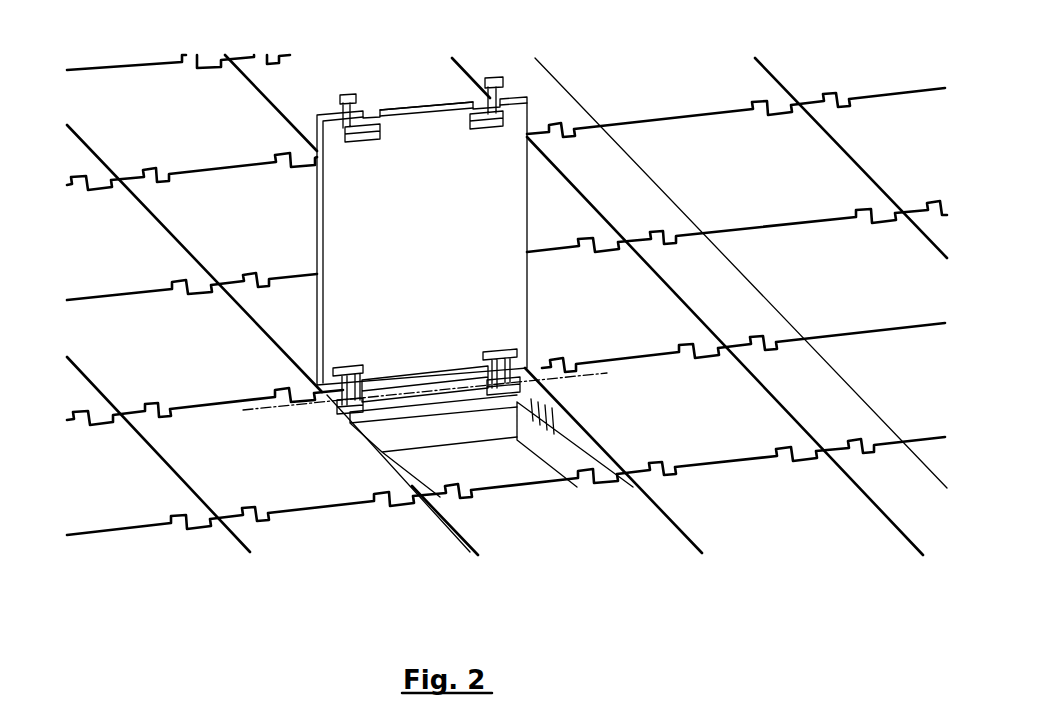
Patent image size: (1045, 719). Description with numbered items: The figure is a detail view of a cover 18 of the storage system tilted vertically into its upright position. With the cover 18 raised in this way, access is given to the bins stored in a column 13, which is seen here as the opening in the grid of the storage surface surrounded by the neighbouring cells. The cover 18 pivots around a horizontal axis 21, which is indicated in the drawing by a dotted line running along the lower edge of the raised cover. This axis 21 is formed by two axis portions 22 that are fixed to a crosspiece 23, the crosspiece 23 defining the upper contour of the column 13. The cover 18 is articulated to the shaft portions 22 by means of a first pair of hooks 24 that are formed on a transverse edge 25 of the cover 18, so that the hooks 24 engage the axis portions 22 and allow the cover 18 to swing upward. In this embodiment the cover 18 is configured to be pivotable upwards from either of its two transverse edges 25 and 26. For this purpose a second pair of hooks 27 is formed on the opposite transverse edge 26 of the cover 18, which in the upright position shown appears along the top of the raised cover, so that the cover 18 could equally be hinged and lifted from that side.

The column 13 is at (440, 472).
The cover 18 is at (370, 213).
The horizontal axis 21 is at (335, 403).
The axis portions 22 is at (345, 405).
The crosspiece 23 is at (512, 430).
The first pair of hooks 24 is at (527, 373).
The transverse edge 25 is at (440, 380).
The transverse edge 26 is at (412, 104).
The second pair of hooks 27 is at (340, 103).